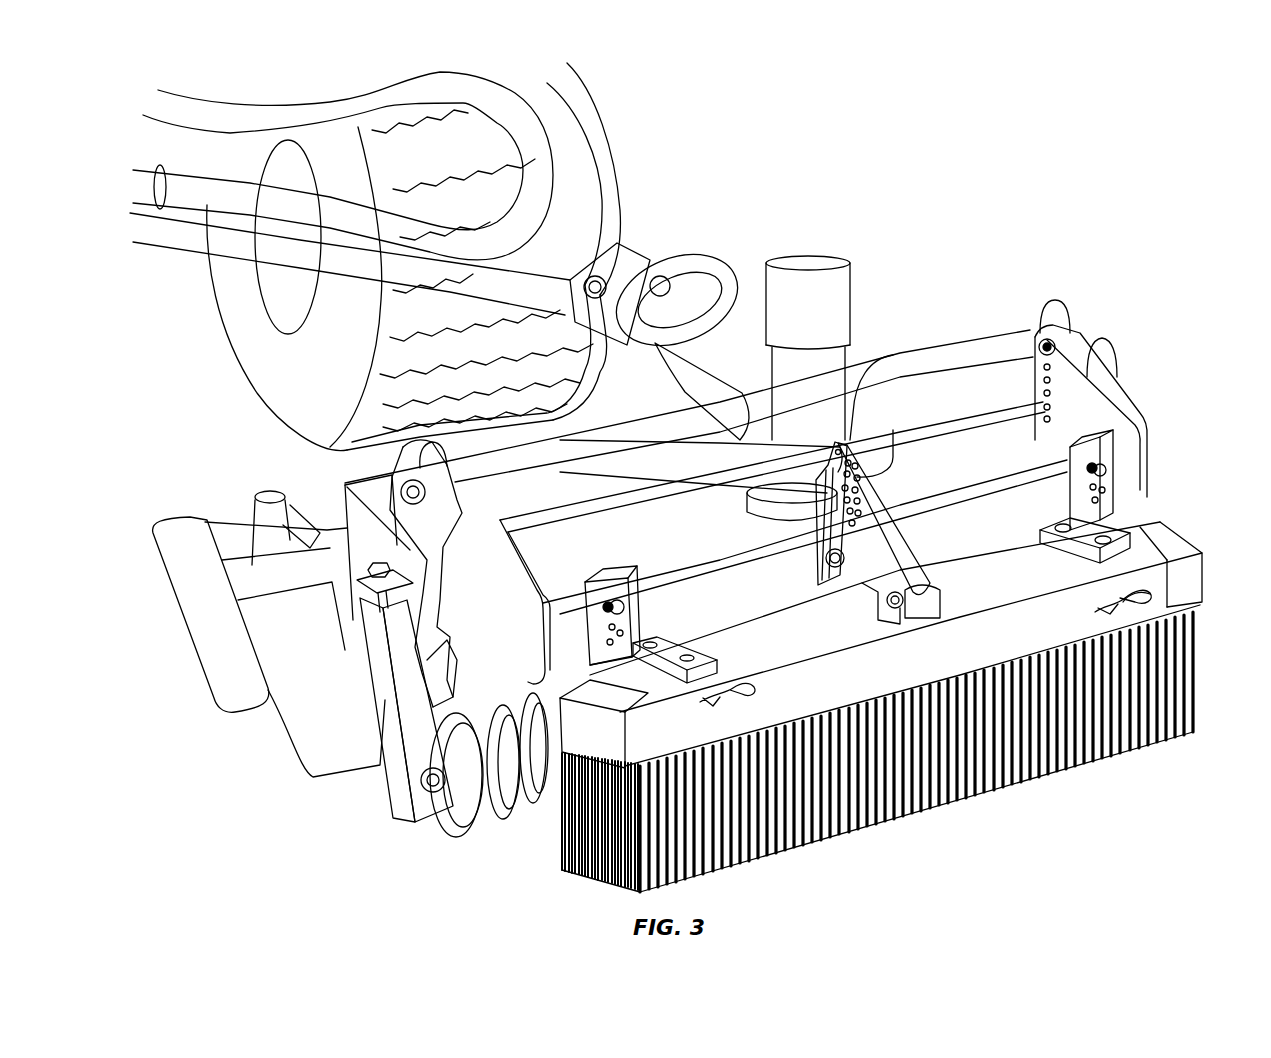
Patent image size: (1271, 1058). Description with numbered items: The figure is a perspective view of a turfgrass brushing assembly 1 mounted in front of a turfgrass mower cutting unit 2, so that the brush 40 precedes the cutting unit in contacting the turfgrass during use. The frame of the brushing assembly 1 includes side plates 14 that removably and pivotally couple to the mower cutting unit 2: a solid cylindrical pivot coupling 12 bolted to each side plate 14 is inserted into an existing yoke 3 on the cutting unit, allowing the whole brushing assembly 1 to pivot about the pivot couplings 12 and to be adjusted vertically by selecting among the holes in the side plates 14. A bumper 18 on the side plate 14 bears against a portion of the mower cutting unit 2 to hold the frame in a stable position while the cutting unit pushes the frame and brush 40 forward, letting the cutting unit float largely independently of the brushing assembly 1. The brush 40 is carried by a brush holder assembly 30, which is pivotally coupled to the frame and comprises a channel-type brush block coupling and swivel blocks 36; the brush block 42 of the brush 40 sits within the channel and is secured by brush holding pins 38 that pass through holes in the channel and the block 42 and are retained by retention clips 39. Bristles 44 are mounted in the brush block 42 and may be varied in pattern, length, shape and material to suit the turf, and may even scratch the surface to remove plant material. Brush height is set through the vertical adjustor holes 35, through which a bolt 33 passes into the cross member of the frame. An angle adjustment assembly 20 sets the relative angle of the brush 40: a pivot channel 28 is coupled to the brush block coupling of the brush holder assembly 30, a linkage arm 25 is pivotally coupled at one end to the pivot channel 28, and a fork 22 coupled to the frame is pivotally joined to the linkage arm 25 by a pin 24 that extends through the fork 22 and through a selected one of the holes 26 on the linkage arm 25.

The turfgrass brushing assembly 1 is at (787, 574).
The mower cutting unit 2 is at (372, 792).
The yoke 3 is at (412, 553).
The pivot coupling 12 is at (432, 480).
The side plate 14 is at (490, 498).
The bumper 18 is at (433, 673).
The angle adjustment assembly 20 is at (852, 405).
The fork 22 is at (837, 512).
The pin 24 is at (830, 485).
The linkage arm 25 is at (887, 527).
The holes 26 is at (848, 475).
The pivot channel 28 is at (875, 597).
The brush holder assembly 30 is at (985, 575).
The bolt 33 is at (1105, 470).
The holes 35 is at (1103, 492).
The swivel block 36 is at (1127, 550).
The brush holding pin 38 is at (1110, 606).
The retention clip 39 is at (1147, 600).
The brush 40 is at (587, 733).
The brush block 42 is at (1196, 562).
The bristles 44 is at (745, 812).